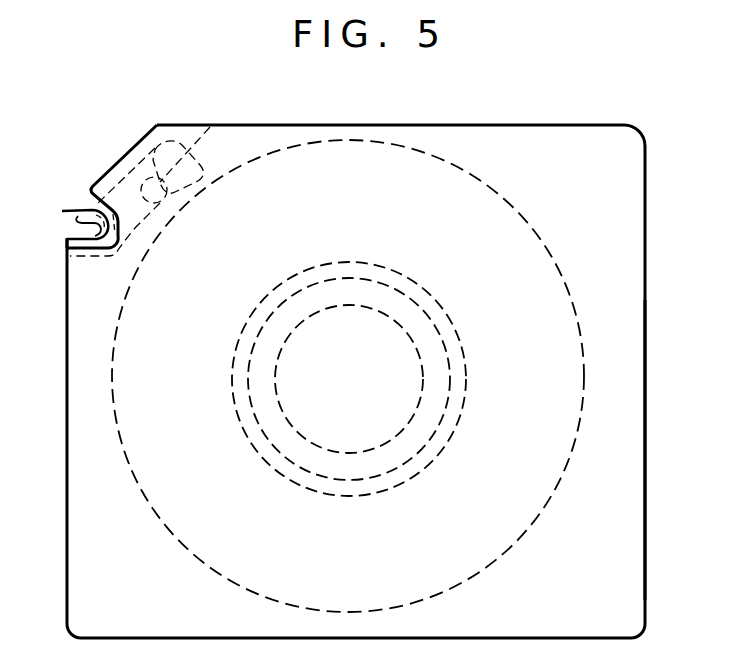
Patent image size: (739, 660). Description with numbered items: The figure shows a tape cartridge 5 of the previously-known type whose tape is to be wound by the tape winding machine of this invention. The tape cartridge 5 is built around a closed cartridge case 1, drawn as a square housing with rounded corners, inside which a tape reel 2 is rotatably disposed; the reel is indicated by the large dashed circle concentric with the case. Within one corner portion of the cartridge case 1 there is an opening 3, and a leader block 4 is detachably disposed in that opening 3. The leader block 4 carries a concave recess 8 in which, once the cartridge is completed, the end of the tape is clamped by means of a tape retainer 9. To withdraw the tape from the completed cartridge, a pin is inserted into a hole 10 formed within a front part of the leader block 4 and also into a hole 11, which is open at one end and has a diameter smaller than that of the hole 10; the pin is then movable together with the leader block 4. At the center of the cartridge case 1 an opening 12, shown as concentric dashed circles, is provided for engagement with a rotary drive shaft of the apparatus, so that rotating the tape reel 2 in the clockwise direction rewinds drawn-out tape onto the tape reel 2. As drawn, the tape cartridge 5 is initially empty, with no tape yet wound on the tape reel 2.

The cartridge case 1 is at (556, 124).
The tape reel 2 is at (584, 385).
The opening 3 is at (124, 157).
The leader block 4 is at (62, 211).
The tape cartridge 5 is at (623, 548).
The concave recess 8 is at (153, 148).
The tape retainer 9 is at (210, 127).
The hole 10 is at (90, 206).
The hole 11 is at (67, 238).
The opening 12 is at (362, 482).